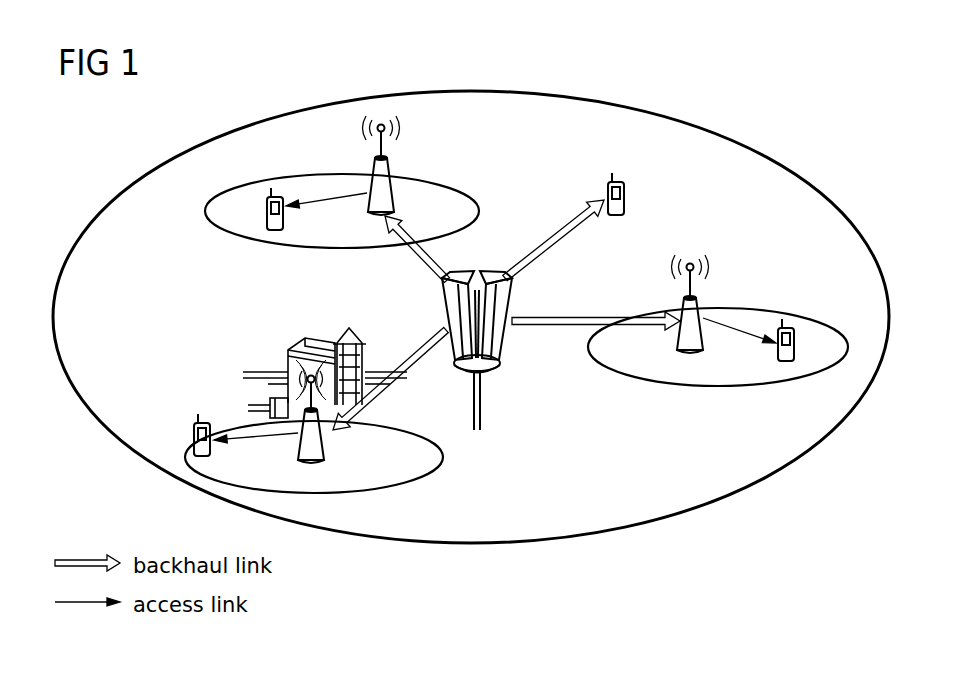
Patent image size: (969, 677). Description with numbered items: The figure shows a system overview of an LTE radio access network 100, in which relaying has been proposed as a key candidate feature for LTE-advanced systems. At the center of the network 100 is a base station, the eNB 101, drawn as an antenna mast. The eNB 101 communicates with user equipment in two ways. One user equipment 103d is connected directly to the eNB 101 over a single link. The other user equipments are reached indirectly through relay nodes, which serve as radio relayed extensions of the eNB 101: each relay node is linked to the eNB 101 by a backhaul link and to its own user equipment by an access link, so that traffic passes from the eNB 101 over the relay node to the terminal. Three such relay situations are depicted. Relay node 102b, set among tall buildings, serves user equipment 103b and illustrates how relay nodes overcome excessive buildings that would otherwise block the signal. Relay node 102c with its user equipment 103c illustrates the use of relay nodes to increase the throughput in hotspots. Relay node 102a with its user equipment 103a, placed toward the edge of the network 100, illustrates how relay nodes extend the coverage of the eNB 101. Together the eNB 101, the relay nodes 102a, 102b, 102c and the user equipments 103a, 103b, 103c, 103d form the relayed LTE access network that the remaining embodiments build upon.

The LTE radio access network 100 is at (752, 114).
The base station or eNB 101 is at (500, 371).
The relay node 102a is at (679, 306).
The relay node 102b is at (324, 445).
The relay node 102c is at (396, 166).
The user equipment 103a is at (777, 354).
The user equipment 103b is at (199, 414).
The user equipment 103c is at (284, 216).
The user equipment 103d is at (607, 191).